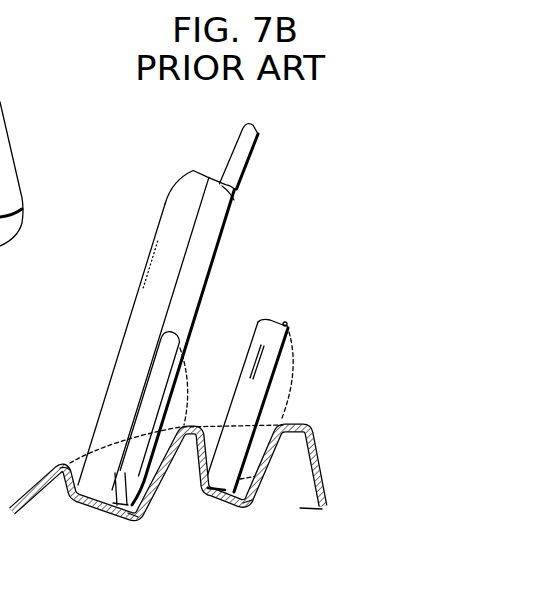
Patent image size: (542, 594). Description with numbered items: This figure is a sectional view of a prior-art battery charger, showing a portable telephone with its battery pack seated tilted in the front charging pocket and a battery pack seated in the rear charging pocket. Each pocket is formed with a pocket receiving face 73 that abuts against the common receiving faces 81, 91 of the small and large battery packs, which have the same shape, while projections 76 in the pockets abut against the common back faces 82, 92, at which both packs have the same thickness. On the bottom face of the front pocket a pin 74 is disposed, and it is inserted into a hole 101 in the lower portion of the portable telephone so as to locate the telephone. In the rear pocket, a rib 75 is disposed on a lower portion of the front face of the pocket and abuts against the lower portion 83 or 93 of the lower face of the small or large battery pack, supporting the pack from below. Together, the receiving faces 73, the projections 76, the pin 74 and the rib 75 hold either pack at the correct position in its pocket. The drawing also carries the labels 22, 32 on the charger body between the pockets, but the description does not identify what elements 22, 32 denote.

The rail 22 is at (167, 501).
The guide channel 32 is at (231, 510).
The pocket receiving face 73 is at (238, 428).
The pin 74 is at (117, 507).
The rib 75 is at (214, 500).
The projection 76 is at (131, 516).
The common receiving face 81 is at (217, 348).
The common receiving face 91 is at (243, 417).
The common back face 82 is at (136, 314).
The common back face 92 is at (113, 460).
The lower portion of lower face 83 is at (305, 405).
The lower portion of lower face 93 is at (263, 481).
The hole 101 is at (79, 456).